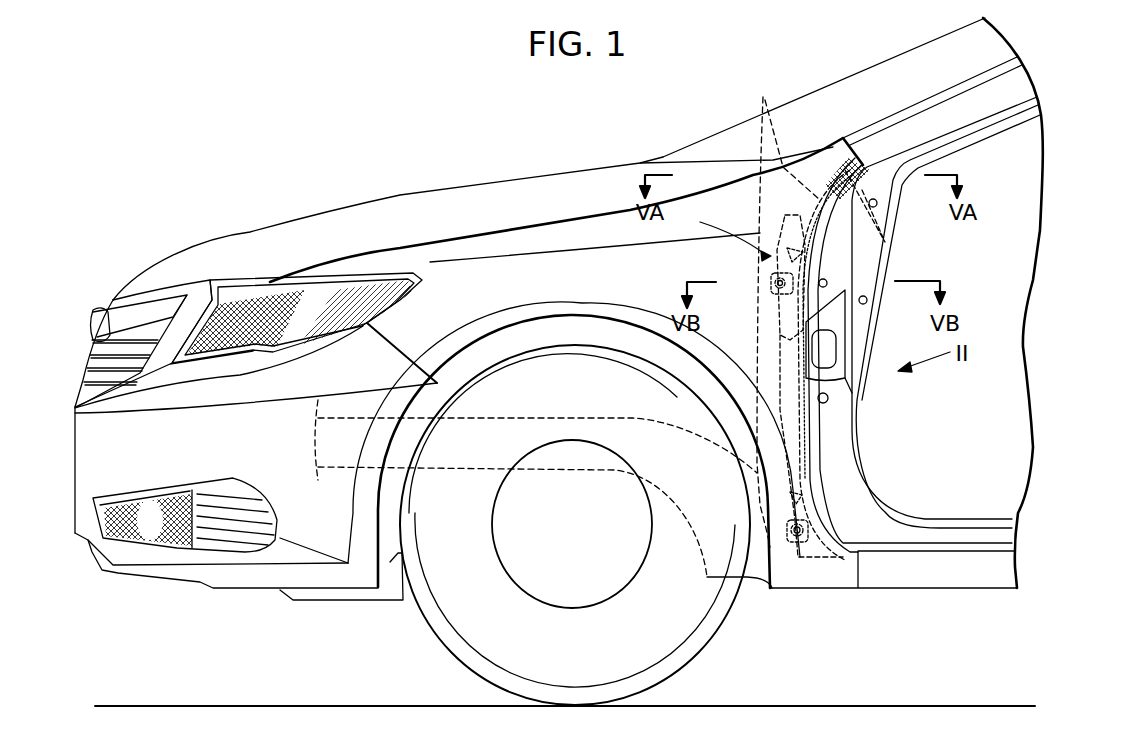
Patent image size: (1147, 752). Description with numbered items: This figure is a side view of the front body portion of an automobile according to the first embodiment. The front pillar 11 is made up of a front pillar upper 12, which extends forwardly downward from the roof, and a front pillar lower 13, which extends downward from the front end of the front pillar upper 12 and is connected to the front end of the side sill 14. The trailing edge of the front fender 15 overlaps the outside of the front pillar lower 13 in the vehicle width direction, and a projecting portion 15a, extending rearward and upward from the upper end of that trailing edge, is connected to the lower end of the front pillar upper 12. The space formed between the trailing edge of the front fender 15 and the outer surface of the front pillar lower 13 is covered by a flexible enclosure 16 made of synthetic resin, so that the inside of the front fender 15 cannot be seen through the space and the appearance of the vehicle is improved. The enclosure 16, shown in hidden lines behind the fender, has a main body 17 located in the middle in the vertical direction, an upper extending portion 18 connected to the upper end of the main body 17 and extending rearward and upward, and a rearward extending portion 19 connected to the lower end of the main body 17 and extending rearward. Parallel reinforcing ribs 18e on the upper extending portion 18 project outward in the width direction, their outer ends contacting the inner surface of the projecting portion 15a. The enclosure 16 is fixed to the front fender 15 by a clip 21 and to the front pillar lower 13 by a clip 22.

The front pillar 11 is at (1087, 153).
The front pillar upper 12 is at (996, 119).
The front pillar lower 13 is at (897, 233).
The side sill 14 is at (967, 591).
The front fender 15 is at (483, 230).
The projecting portion 15a is at (826, 167).
The enclosure 16 is at (722, 236).
The main body 17 is at (773, 340).
The upper extending portion 18 is at (567, 330).
The reinforcing ribs 18e is at (885, 242).
The rearward extending portion 19 is at (822, 560).
The clip 21 is at (783, 245).
The clip 22 is at (770, 288).